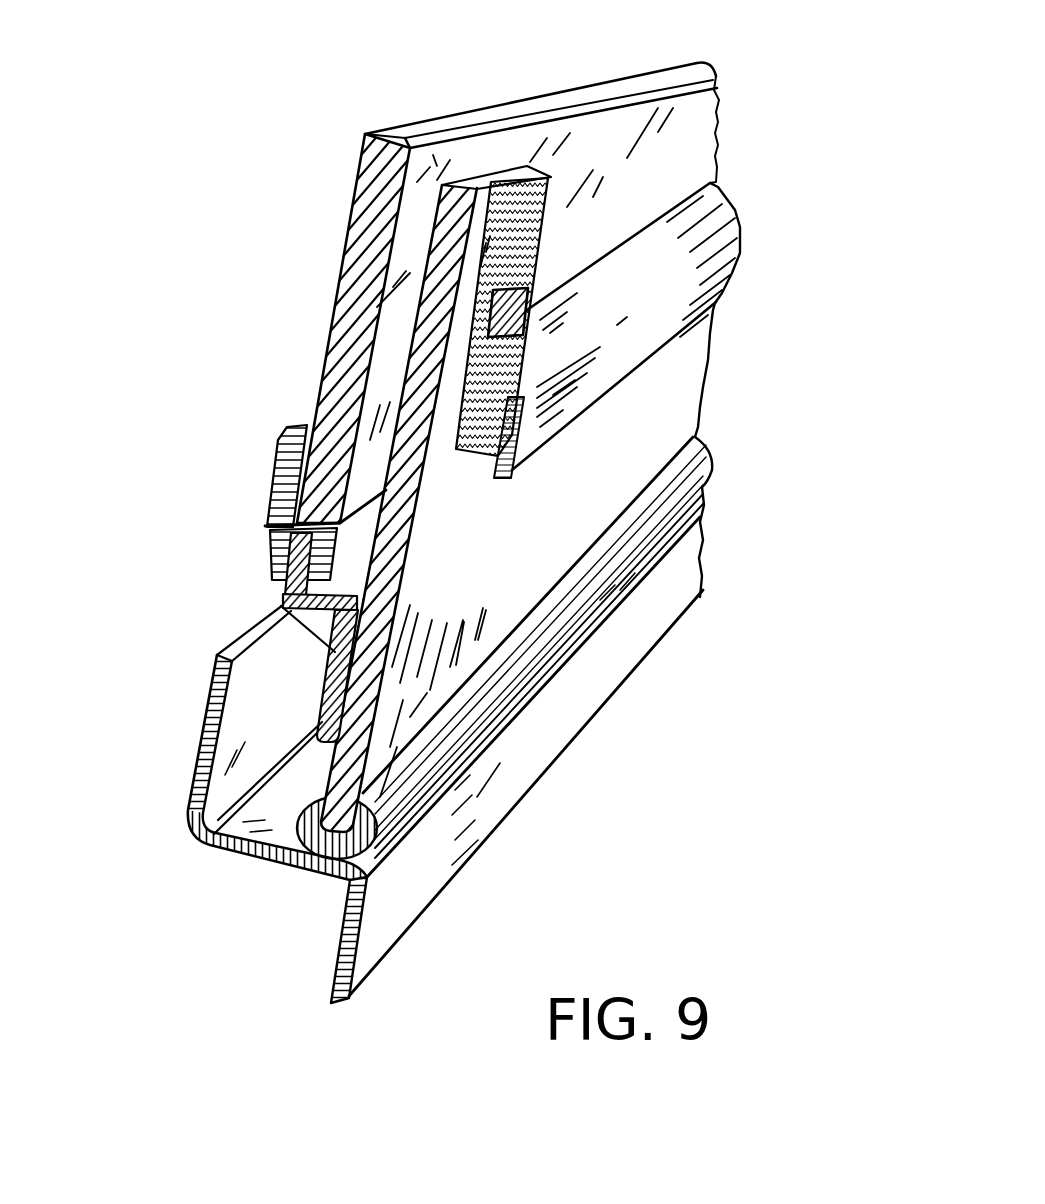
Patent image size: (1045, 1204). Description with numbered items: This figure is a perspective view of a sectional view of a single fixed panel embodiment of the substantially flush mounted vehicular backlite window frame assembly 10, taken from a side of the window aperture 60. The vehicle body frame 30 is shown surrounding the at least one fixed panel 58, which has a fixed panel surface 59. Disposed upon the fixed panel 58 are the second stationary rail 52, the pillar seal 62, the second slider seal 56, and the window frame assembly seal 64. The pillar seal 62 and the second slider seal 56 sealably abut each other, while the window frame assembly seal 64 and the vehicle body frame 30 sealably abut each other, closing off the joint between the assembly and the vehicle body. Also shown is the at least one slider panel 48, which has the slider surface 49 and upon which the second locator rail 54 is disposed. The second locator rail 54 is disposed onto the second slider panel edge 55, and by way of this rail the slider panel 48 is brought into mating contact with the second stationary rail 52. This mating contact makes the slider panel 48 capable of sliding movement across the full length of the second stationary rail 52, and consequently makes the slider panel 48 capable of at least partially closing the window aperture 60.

The substantially flush mounted vehicular backlite window frame assembly 10 is at (250, 192).
The vehicle body frame 30 is at (193, 792).
The at least one slider panel 48 is at (330, 403).
The slider surface 49 is at (577, 212).
The second stationary rail 52 is at (281, 606).
The second locator rail 54 is at (277, 483).
The second slider panel edge 55 is at (270, 540).
The second slider seal 56 is at (615, 355).
The at least one fixed panel 58 is at (343, 762).
The fixed panel surface 59 is at (405, 380).
The window aperture 60 is at (782, 87).
The pillar seal 62 is at (480, 463).
The window frame assembly seal 64 is at (320, 866).